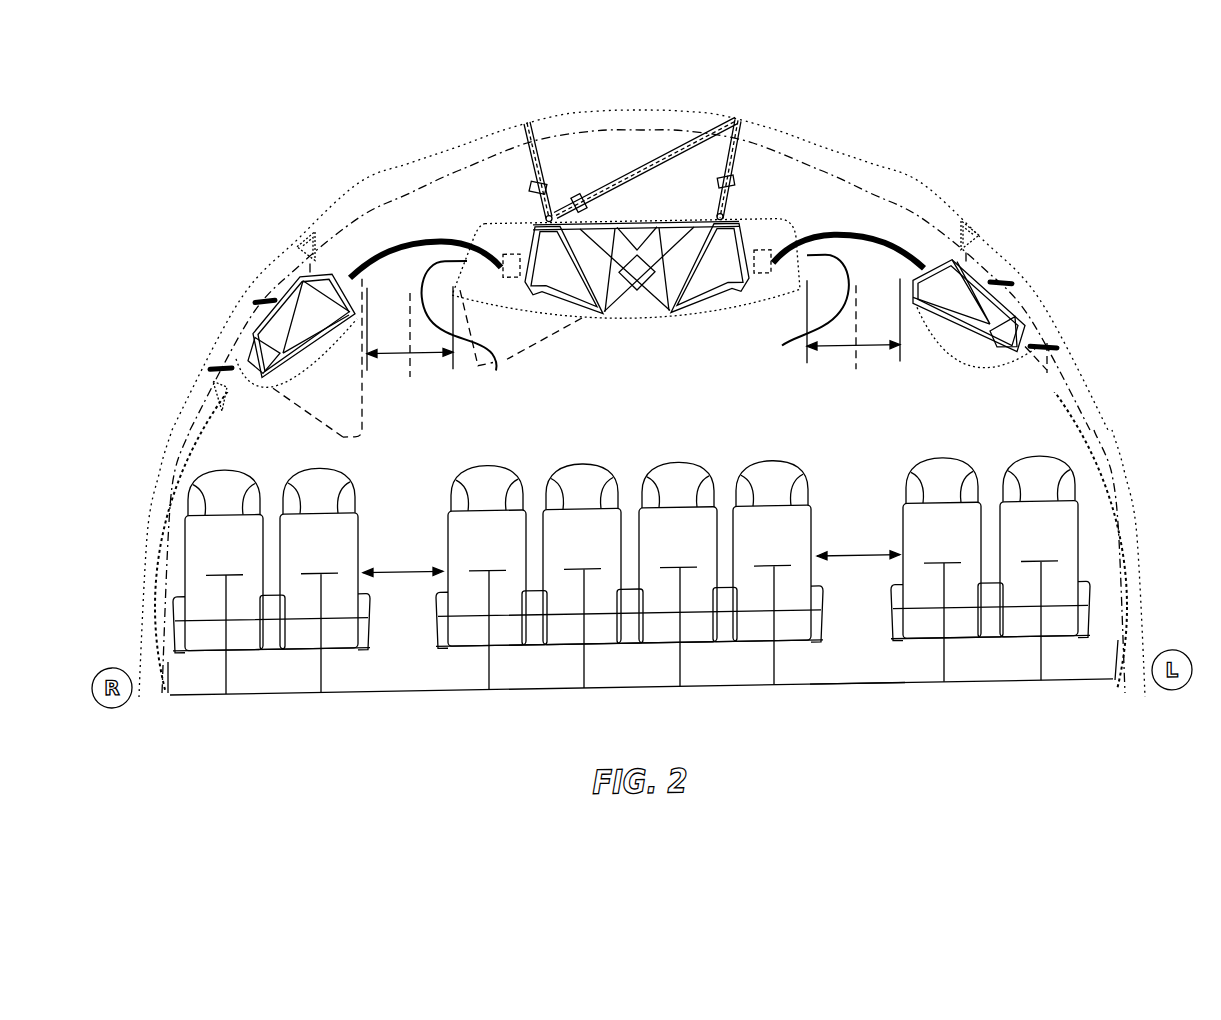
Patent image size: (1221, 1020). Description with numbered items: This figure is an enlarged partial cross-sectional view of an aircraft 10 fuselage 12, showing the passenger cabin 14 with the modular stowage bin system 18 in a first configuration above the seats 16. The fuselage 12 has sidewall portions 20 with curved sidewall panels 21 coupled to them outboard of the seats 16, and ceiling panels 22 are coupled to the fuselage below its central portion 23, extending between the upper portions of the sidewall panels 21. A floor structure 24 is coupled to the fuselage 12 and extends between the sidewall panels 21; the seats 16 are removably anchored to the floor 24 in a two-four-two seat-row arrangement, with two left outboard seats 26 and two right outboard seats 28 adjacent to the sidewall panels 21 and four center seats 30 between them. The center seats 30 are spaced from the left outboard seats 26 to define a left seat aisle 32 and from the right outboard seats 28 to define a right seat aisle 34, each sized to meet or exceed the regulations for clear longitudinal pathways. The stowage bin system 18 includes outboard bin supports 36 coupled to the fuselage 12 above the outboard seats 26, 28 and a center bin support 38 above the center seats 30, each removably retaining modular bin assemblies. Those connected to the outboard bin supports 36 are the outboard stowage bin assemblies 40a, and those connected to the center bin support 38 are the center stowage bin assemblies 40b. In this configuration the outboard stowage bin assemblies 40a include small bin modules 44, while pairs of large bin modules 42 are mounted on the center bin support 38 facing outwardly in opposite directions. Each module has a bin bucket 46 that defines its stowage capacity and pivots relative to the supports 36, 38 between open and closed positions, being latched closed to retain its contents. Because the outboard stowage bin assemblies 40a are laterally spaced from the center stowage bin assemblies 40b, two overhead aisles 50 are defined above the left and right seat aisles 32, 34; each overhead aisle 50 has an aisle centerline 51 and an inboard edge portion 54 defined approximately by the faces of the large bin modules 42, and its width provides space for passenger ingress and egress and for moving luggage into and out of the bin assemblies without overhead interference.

The aircraft 10 is at (218, 158).
The fuselage 12 is at (906, 180).
The passenger cabin 14 is at (1097, 546).
The seats 16 is at (893, 642).
The stowage bin system 18 is at (492, 186).
The sidewall portions 20 is at (145, 539).
The curved sidewall panels 21 is at (172, 482).
The ceiling panels 22 is at (351, 272).
The central portion 23 is at (632, 112).
The floor structure 24 is at (372, 688).
The left outboard seats 26 is at (963, 643).
The right outboard seats 28 is at (237, 643).
The center seats 30 is at (512, 643).
The left seat aisle 32 is at (886, 561).
The right seat aisle 34 is at (400, 570).
The outboard bin supports 36 is at (300, 232).
The center bin support 38 is at (526, 122).
The outboard stowage bin assemblies 40a is at (255, 327).
The center stowage bin assemblies 40b is at (642, 222).
The large bin modules 42 is at (590, 318).
The small bin modules 44 is at (320, 362).
The bin bucket 46 is at (358, 425).
The overhead aisles 50 is at (392, 355).
The aisle centerline 51 is at (418, 352).
The inboard edge portion 54 is at (635, 322).